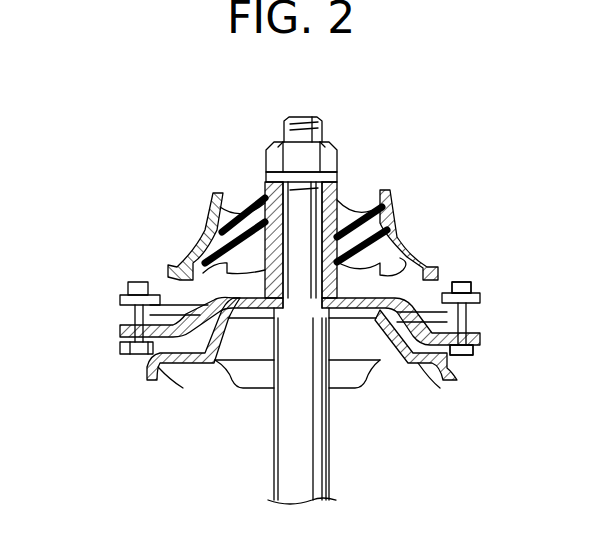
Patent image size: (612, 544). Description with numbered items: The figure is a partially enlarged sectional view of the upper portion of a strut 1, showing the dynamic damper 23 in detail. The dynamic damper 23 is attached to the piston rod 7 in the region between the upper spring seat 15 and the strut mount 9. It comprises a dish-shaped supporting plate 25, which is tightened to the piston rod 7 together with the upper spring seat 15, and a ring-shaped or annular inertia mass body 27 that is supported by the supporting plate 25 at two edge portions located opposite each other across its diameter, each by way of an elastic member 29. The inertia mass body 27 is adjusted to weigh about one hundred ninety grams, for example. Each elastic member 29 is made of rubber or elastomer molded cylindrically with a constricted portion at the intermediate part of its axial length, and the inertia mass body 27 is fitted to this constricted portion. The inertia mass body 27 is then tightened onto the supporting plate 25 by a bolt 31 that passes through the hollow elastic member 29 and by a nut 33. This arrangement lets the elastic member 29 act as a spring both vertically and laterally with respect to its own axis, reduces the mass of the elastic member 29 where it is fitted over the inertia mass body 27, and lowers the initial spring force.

The engine mount 1 is at (262, 470).
The piston rod 7 is at (318, 478).
The strut mount 9 is at (243, 213).
The upper spring seat 15 is at (178, 386).
The dynamic damper 23 is at (354, 282).
The supporting plate 25 is at (412, 340).
The inertia mass body 27 is at (170, 295).
The elastic member 29 is at (120, 322).
The bolt 31 is at (473, 357).
The nut 33 is at (462, 283).